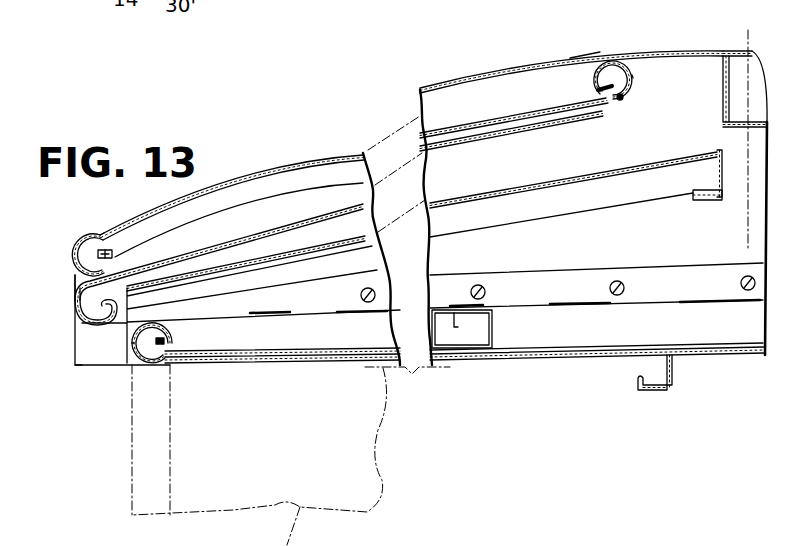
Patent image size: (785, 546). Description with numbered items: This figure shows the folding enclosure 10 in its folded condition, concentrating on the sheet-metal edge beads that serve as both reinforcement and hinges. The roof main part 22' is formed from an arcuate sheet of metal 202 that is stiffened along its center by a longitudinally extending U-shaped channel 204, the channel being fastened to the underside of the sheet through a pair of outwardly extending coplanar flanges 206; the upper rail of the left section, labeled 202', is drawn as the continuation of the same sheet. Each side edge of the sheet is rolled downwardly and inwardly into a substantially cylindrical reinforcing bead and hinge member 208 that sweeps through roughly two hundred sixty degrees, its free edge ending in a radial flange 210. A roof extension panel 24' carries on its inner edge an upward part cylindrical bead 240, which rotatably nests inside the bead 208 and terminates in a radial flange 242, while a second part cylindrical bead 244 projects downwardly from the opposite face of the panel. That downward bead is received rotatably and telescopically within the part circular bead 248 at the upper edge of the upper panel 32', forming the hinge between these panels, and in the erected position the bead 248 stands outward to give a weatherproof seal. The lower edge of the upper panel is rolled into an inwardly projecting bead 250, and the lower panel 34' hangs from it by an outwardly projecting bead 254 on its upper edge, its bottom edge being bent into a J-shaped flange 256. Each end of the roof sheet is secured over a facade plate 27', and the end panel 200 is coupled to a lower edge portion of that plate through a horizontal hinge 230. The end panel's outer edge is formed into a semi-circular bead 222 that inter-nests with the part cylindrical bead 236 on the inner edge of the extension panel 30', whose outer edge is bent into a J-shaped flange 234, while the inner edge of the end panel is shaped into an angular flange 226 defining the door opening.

The enclosure 10 is at (534, 45).
The roof main part 22' is at (600, 37).
The roof extension panel 24' is at (361, 172).
The facade plate 27' is at (58, 392).
The extension panel 30' is at (282, 340).
The upper panel 32' is at (339, 205).
The lower panel 34' is at (422, 215).
The end panel 200 is at (575, 363).
The sheet of metal 202 is at (571, 65).
The top rail of left section 202' is at (232, 181).
The U-shaped channel 204 is at (722, 98).
The coplanar flanges 206 is at (703, 60).
The reinforcing bead and hinge member 208 is at (73, 256).
The flange 210 is at (97, 236).
The semi-circular bead 222 is at (130, 345).
The angular flange 226 is at (645, 392).
The horizontal hinge 230 is at (520, 270).
The J-shaped flange 234 is at (495, 331).
The part cylindrical bead 236 is at (153, 364).
The part cylindrical bead 240 is at (77, 267).
The radial flange 242 is at (143, 238).
The part cylindrical bead 244 is at (620, 100).
The part circular bead 248 is at (634, 75).
The part cylindrical bead 250 is at (88, 326).
The part cylindrical bead 254 is at (78, 308).
The J-shaped flange 256 is at (703, 200).